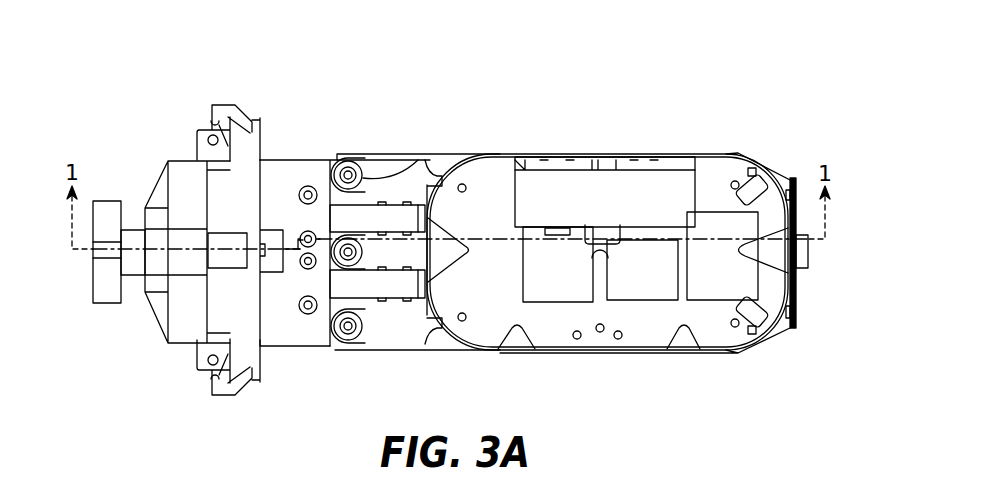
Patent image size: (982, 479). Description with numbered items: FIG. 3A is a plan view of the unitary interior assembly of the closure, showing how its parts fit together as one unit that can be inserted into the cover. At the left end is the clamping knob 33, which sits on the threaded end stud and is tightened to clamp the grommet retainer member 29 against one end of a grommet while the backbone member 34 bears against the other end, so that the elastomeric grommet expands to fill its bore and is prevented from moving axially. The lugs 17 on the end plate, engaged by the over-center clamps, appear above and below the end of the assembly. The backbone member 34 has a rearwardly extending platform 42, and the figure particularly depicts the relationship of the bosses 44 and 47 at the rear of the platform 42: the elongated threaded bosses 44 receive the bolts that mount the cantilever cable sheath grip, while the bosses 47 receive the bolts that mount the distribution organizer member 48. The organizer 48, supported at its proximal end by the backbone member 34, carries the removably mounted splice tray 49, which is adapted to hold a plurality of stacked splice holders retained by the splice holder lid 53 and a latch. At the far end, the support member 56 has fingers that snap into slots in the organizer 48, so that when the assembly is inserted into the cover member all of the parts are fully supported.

The lugs 17 is at (226, 105).
The grommet retainer member 29 is at (177, 336).
The clamping knob 33 is at (93, 285).
The backbone member 34 is at (297, 158).
The platform 42 is at (275, 172).
The threaded bosses 44 is at (308, 186).
The bosses 47 is at (366, 172).
The distribution organizer member 48 is at (378, 153).
The splice tray 49 is at (488, 180).
The splice holder lid 53 is at (663, 185).
The support member 56 is at (797, 324).